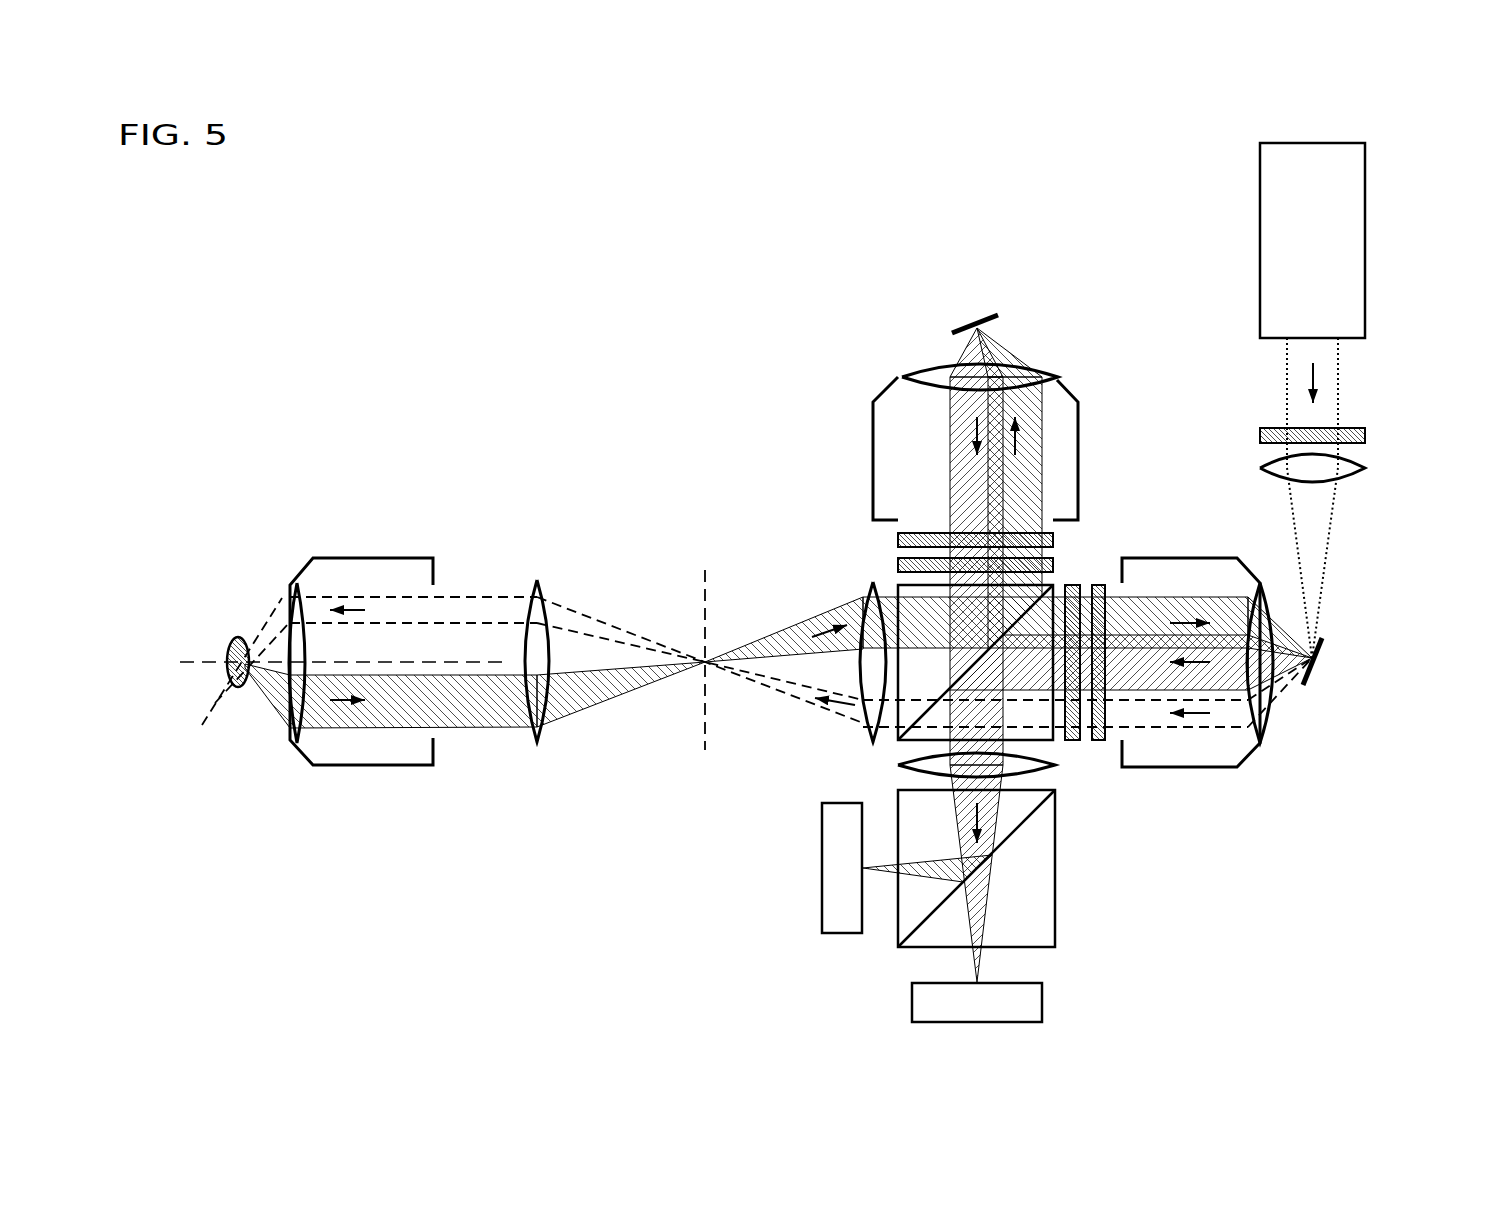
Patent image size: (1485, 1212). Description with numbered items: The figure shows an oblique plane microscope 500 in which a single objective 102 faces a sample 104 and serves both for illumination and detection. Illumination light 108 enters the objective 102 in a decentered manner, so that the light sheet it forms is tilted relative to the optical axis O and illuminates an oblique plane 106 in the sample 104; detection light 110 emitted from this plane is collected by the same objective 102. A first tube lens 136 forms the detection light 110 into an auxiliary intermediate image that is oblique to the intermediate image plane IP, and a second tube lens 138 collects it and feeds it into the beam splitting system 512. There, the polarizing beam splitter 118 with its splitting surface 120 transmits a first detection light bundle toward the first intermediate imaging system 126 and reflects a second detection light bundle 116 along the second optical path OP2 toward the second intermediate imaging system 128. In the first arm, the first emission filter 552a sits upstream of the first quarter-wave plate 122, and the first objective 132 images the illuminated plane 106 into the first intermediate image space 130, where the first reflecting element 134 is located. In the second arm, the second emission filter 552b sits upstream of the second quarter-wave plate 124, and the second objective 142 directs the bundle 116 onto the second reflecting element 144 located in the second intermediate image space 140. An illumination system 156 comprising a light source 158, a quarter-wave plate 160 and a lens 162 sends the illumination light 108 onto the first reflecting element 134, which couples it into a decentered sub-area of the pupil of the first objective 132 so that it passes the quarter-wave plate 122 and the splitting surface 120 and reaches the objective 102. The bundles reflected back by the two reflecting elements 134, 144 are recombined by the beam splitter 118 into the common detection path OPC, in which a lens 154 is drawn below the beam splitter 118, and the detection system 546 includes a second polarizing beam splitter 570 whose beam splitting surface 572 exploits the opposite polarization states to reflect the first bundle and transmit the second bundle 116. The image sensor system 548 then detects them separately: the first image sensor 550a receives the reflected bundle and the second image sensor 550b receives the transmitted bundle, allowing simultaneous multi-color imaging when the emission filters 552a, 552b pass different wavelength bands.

The oblique plane microscope 500 is at (621, 173).
The single objective 102 is at (368, 558).
The sample 104 is at (236, 637).
The optical axis O is at (190, 662).
The illuminated plane 106 is at (207, 690).
The illumination light 108 is at (432, 610).
The detection light 110 is at (485, 717).
The tube lens 136 is at (538, 592).
The intermediate image plane IP is at (703, 590).
The tube lens 138 is at (867, 593).
The beam splitting system 512 is at (812, 701).
The polarizing beam splitter 118 is at (910, 742).
The second intermediate imaging system 128 is at (967, 491).
The second quarter-wave plate 124 is at (898, 538).
The second emission filter 552b is at (898, 564).
The first emission filter 552a is at (1073, 584).
The second detection light bundle 116 is at (1033, 431).
The second optical path OP2 is at (1033, 468).
The second objective 142 is at (895, 380).
The second intermediate image space 140 is at (975, 349).
The second reflecting element 144 is at (986, 318).
The first intermediate imaging system 126 is at (1252, 676).
The splitting surface 120 is at (1098, 742).
The first quarter-wave plate 122 is at (1122, 735).
The first objective 132 is at (1250, 757).
The first reflecting element 134 is at (1328, 645).
The first intermediate image space 130 is at (1285, 672).
The illumination system 156 is at (1366, 238).
The light source 158 is at (1275, 238).
The quarter-wave plate 160 is at (1368, 434).
The lens 162 is at (1350, 476).
The detection system 546 is at (963, 841).
The imaging lens 154 is at (985, 783).
The common detection path OPC is at (975, 660).
The image sensor system 548 is at (879, 906).
The second beam splitter 570 is at (1030, 948).
The beam splitting surface 572 is at (917, 933).
The first image sensor 550a is at (822, 868).
The second image sensor 550b is at (1043, 1000).